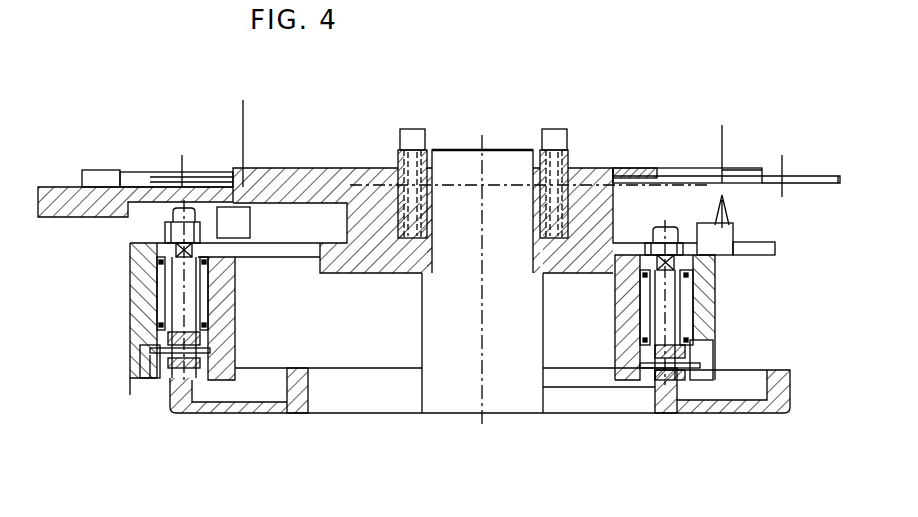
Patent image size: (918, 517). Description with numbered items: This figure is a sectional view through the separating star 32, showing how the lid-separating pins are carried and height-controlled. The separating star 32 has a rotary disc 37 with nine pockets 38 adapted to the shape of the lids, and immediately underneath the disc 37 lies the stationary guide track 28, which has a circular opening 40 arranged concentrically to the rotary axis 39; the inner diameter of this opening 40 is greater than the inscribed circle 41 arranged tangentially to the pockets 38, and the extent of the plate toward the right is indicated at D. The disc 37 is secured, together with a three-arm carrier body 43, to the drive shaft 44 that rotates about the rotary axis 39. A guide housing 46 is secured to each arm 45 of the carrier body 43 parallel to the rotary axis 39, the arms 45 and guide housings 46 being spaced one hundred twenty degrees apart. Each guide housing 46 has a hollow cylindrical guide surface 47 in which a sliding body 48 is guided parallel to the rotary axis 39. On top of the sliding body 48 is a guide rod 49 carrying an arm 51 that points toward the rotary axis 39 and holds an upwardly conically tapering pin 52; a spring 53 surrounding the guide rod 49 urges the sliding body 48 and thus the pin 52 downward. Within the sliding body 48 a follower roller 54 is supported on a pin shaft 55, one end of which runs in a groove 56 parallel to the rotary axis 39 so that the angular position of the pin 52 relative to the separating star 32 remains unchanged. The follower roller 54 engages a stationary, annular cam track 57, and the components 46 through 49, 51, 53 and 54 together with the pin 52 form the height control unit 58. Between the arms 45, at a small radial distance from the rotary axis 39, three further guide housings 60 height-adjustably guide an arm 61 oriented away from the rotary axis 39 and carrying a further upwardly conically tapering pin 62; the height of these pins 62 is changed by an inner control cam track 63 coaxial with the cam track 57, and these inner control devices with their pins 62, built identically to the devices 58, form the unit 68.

The guide track 28 is at (67, 184).
The separating star 32 is at (599, 150).
The rotary disc 37 is at (643, 166).
The pockets 38 is at (725, 167).
The rotary axis 39 is at (484, 378).
The circular opening 40 is at (224, 184).
The inscribed circle 41 is at (241, 107).
The three-arm carrier body 43 is at (367, 232).
The drive shaft 44 is at (498, 205).
The arm 45 is at (305, 266).
The guide housing 46 is at (135, 322).
The hollow cylindrical guide surface 47 is at (214, 322).
The sliding body 48 is at (148, 341).
The guide rod 49 is at (163, 306).
The arm 51 is at (163, 234).
The pin 52 is at (249, 207).
The spring 53 is at (202, 308).
The follower roller 54 is at (194, 370).
The pin shaft 55 is at (142, 365).
The groove 56 is at (151, 382).
The stationary cam track 57 is at (184, 407).
The height control device 58 is at (134, 398).
The further guide housings 60 is at (616, 311).
The arm 61 is at (700, 252).
The pin 62 is at (730, 216).
The inner control cam track 63 is at (302, 406).
The control devices 68 is at (727, 357).
The strip D is at (840, 168).